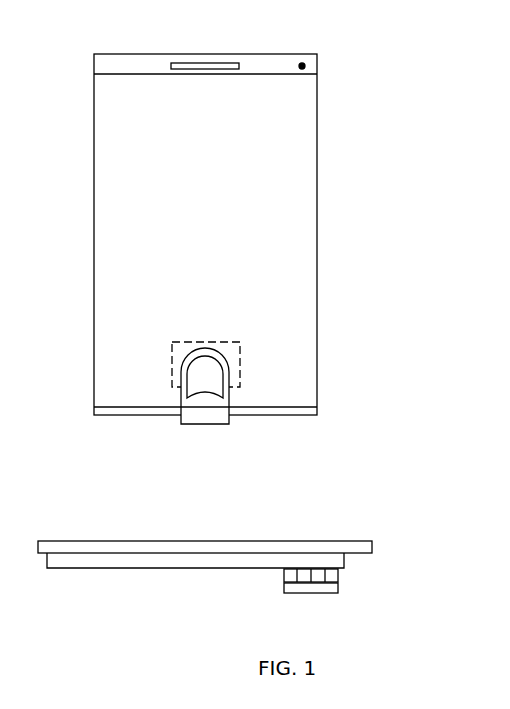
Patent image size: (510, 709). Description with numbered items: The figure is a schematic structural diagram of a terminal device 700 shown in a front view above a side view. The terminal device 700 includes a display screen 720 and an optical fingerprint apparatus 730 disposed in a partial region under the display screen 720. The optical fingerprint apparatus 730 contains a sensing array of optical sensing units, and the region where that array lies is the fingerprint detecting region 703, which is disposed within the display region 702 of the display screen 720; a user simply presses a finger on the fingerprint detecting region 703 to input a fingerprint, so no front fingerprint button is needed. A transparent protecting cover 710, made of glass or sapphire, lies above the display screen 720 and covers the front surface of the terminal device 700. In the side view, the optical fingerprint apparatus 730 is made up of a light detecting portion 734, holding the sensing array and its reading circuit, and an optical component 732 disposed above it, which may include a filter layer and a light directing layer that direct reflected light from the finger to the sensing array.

The terminal device 700 is at (207, 23).
The display region 702 is at (300, 343).
The fingerprint detecting region 703 is at (238, 365).
The transparent protecting cover 710 is at (273, 67).
The display screen 720 is at (213, 569).
The optical fingerprint apparatus 730 is at (376, 591).
The optical component 732 is at (338, 575).
The light detecting portion 734 is at (338, 587).